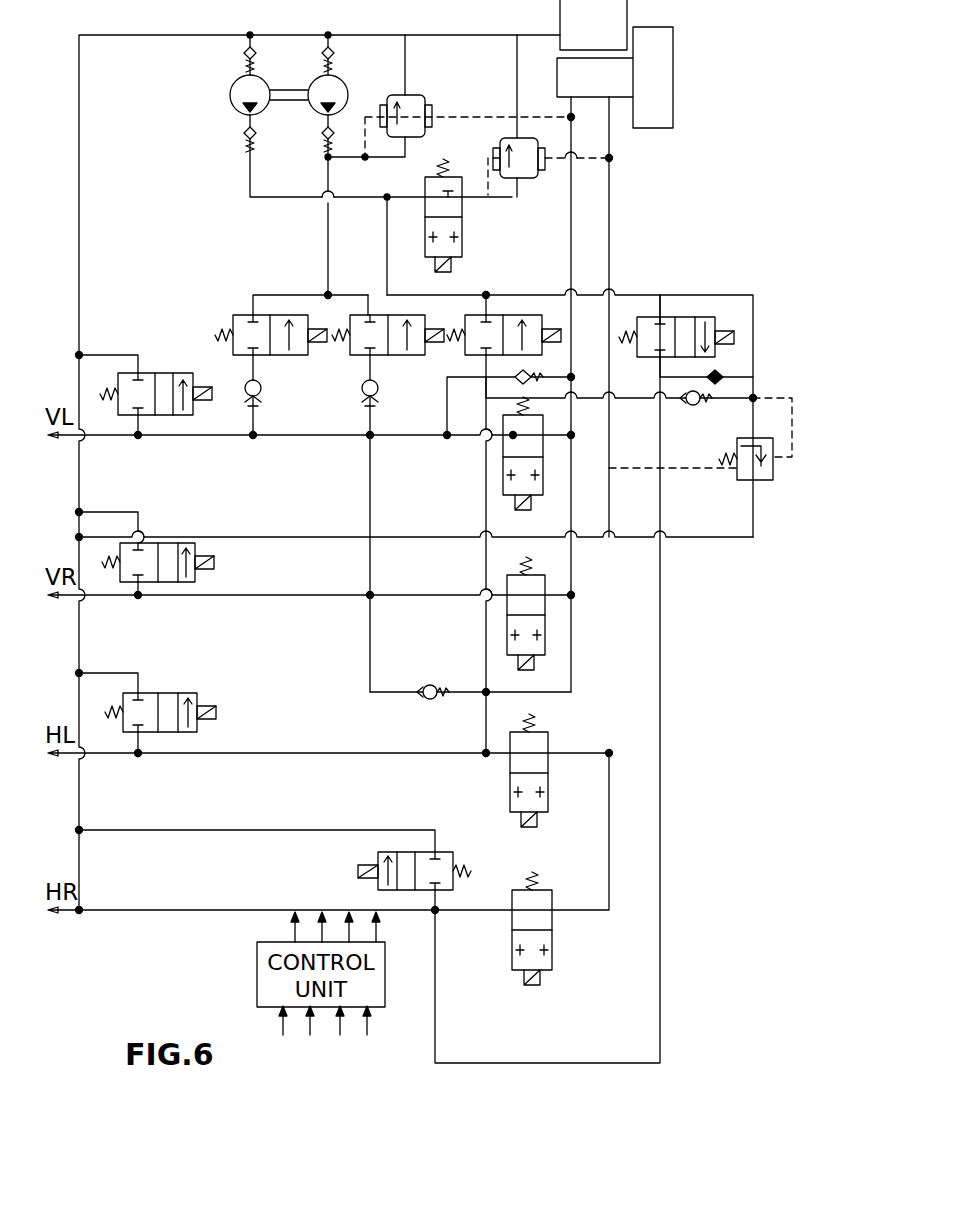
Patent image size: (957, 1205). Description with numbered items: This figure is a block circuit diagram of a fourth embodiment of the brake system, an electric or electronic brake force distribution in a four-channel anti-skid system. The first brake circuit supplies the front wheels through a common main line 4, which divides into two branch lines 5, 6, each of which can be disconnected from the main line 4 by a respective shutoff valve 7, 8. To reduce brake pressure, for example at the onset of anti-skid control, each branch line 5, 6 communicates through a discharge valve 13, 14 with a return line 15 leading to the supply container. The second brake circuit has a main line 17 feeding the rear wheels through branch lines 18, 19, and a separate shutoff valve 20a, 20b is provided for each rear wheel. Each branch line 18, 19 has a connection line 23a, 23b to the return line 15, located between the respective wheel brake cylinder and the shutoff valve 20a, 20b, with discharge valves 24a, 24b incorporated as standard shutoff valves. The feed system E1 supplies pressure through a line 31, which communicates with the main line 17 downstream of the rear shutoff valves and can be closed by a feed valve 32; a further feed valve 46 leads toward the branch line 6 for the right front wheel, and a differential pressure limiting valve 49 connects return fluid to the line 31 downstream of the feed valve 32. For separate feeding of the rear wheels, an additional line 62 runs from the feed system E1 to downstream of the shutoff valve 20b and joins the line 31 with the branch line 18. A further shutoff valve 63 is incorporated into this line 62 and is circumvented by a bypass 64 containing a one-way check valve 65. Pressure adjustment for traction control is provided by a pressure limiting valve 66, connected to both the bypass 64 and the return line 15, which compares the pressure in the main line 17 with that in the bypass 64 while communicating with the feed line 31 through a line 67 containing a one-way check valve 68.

The main line 4 is at (575, 507).
The branch line 5 is at (273, 432).
The branch line 6 is at (278, 592).
The shutoff valve 7 is at (545, 472).
The shutoff valve 8 is at (548, 632).
The discharge valve 13 is at (150, 370).
The discharge valve 14 is at (172, 540).
The return line 15 is at (80, 251).
The main line 17 is at (612, 507).
The branch line 18 is at (240, 907).
The branch line 19 is at (305, 750).
The shutoff valve 20a is at (548, 740).
The shutoff valve 20b is at (552, 965).
The connection line 23a is at (103, 672).
The connection line 23b is at (257, 814).
The discharge valve 24a is at (178, 690).
The discharge valve 24b is at (443, 850).
The line 31 is at (480, 293).
The feed valve 32 is at (520, 315).
The feed valve 46 is at (397, 357).
The pressure limiting valve 49 is at (297, 357).
The line 62 is at (663, 637).
The shutoff valve 63 is at (660, 315).
The bypass 64 is at (730, 297).
The one-way check valve 65 is at (725, 372).
The pressure limiting valve 66 is at (737, 482).
The line 67 is at (633, 400).
The one-way check valve 68 is at (693, 410).
The feed system E1 is at (464, 101).